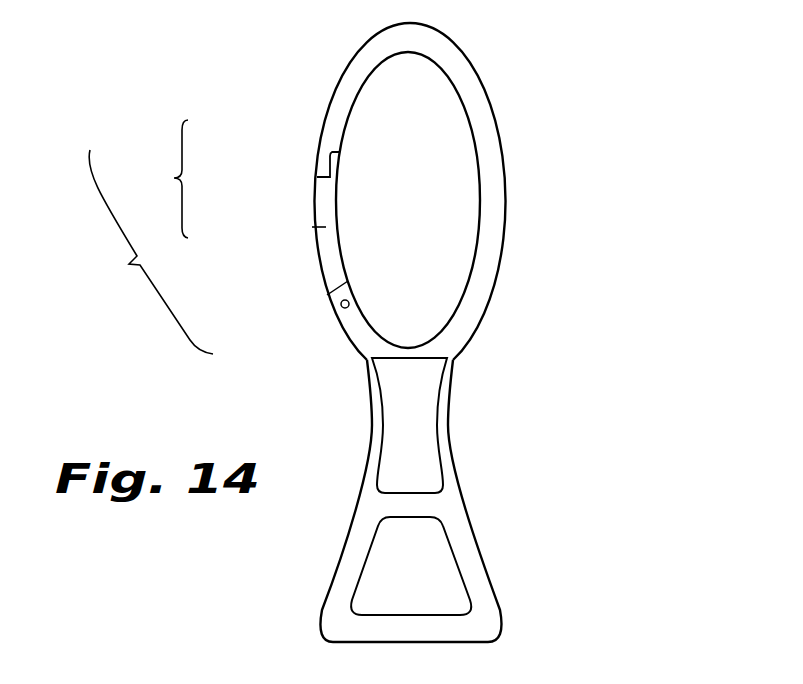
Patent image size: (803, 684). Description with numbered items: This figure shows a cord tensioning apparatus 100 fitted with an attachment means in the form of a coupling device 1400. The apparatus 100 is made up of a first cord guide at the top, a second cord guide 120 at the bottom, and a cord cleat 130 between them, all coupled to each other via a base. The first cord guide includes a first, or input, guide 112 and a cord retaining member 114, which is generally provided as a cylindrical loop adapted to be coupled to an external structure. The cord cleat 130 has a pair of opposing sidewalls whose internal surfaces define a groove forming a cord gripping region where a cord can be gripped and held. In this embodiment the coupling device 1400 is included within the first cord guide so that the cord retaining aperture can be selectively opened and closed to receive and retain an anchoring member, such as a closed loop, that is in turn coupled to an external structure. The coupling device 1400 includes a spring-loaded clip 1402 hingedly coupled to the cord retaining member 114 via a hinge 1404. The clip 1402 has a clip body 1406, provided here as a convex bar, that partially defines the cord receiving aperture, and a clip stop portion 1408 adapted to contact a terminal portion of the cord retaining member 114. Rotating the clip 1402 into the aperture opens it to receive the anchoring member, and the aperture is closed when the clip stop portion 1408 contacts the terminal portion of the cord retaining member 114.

The cord tensioning apparatus 100 is at (624, 52).
The first guide 112 is at (410, 345).
The cord retaining member 114 is at (450, 60).
The second cord guide 120 is at (504, 547).
The cord cleat 130 is at (468, 413).
The coupling device 1400 is at (129, 264).
The spring-loaded clip 1402 is at (174, 178).
The hinge 1404 is at (340, 306).
The clip body 1406 is at (325, 228).
The clip stop portion 1408 is at (340, 161).